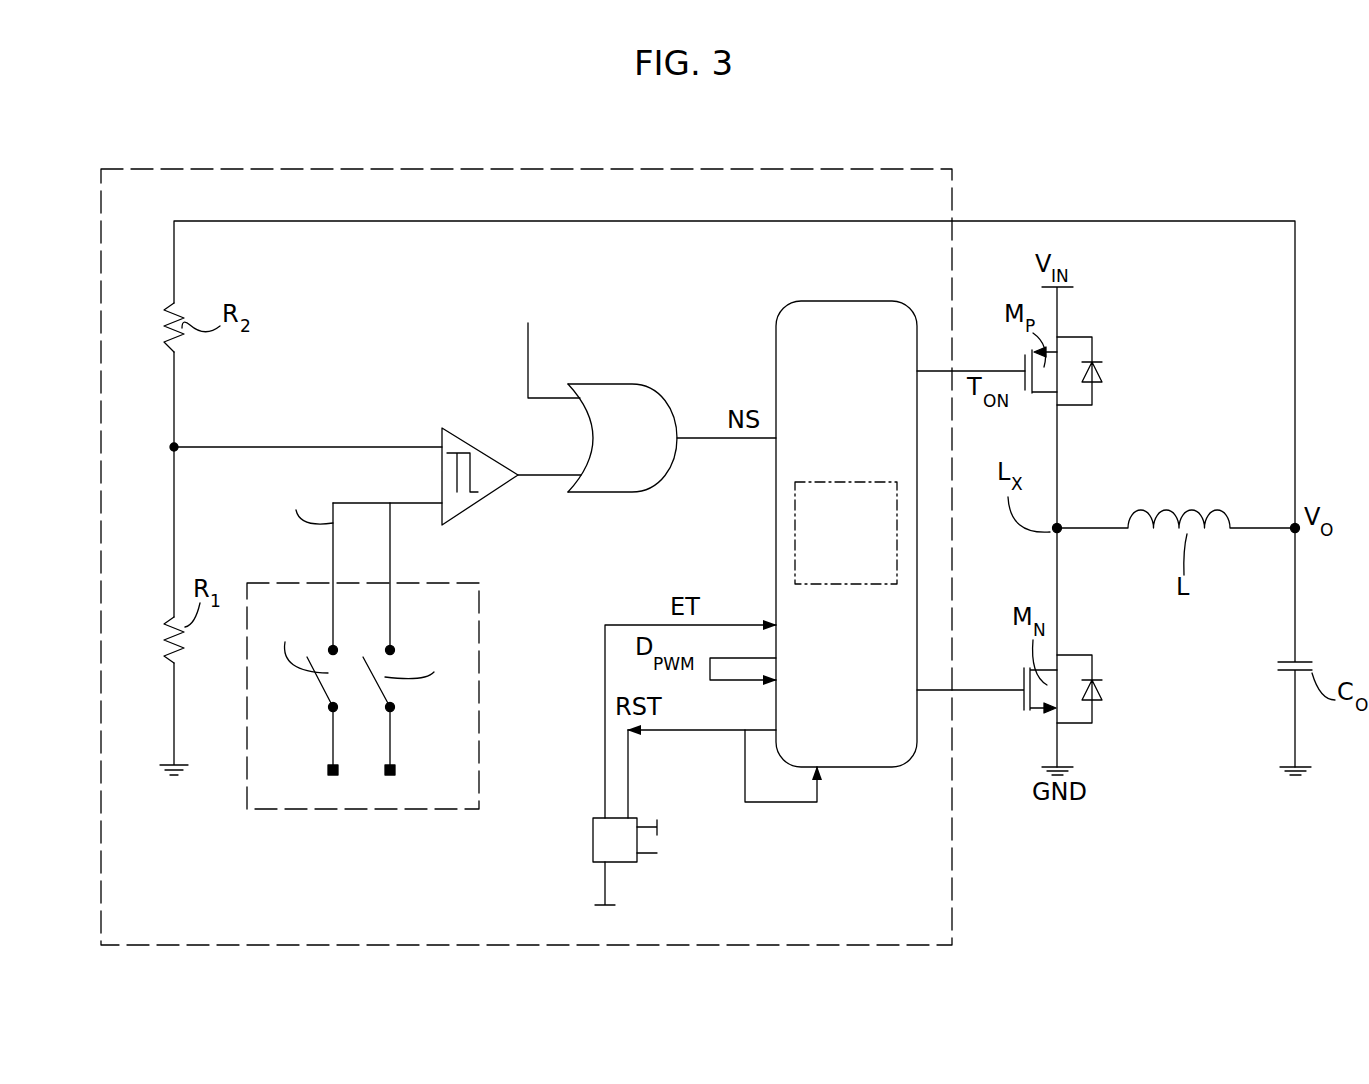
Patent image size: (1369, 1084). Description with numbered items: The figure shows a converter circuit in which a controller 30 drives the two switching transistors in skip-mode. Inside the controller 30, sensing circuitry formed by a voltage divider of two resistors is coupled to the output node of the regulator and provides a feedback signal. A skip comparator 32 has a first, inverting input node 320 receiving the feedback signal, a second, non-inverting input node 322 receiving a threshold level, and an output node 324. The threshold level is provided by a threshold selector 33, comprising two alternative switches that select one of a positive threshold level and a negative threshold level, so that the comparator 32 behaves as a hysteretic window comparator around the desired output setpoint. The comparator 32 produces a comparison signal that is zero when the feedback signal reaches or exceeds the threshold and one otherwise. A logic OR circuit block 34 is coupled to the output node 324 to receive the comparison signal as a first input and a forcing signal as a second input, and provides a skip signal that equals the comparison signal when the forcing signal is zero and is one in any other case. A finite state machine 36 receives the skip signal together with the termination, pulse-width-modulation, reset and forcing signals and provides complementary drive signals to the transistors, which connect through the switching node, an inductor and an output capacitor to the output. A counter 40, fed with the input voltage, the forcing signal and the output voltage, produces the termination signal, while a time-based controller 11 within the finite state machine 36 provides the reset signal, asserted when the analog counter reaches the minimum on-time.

The controller 30 is at (100, 318).
The skip comparator 32 is at (467, 435).
The first input node 320 is at (400, 447).
The second input node 322 is at (420, 503).
The output node 324 is at (537, 477).
The logic OR circuit block 34 is at (648, 395).
The finite state machine 36 is at (880, 752).
The time-based controller 11 is at (863, 498).
The threshold selector 33 is at (479, 722).
The counter 40 is at (593, 838).